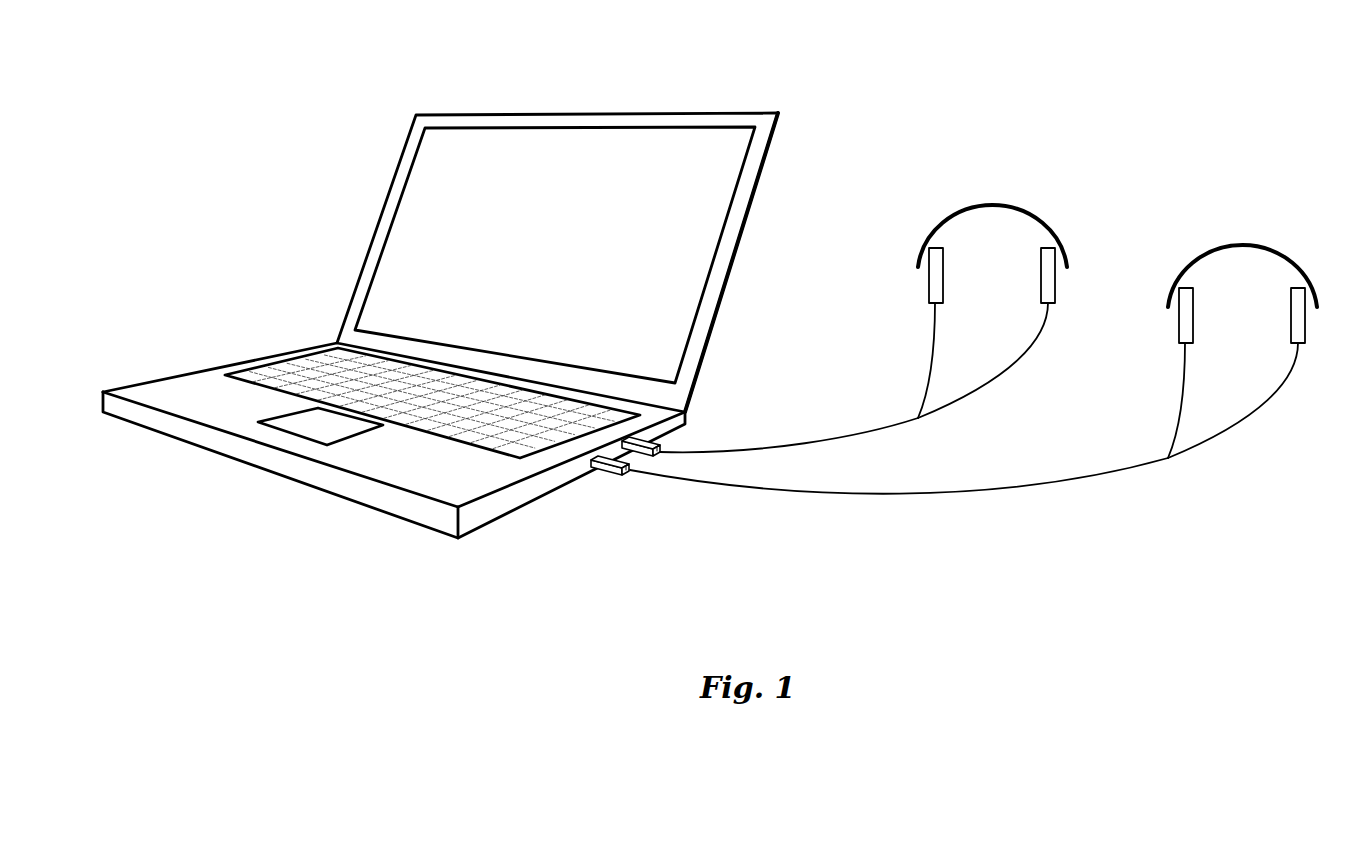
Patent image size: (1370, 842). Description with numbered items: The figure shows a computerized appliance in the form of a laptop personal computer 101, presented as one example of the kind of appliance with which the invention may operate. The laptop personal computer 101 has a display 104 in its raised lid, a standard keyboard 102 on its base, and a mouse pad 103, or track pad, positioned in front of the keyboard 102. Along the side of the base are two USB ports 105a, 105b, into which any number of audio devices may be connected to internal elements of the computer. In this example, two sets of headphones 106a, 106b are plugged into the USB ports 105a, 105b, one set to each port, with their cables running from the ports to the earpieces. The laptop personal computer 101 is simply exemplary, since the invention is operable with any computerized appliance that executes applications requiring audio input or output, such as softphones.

The laptop personal computer 101 is at (437, 289).
The keyboard 102 is at (317, 353).
The mouse pad 103 is at (312, 423).
The display 104 is at (528, 188).
The USB port 105a is at (602, 476).
The USB port 105b is at (645, 443).
The headphones 106a is at (1000, 202).
The headphones 106b is at (1250, 242).